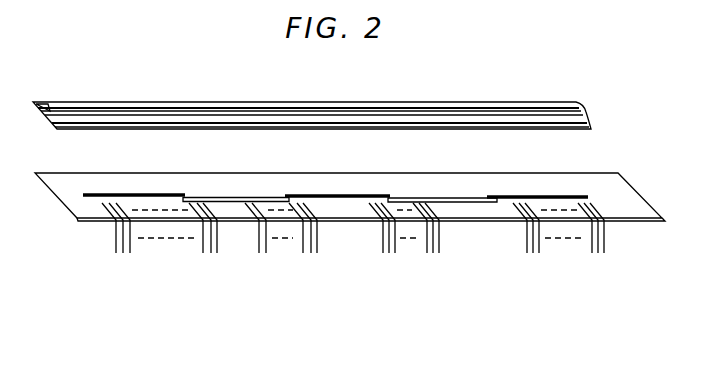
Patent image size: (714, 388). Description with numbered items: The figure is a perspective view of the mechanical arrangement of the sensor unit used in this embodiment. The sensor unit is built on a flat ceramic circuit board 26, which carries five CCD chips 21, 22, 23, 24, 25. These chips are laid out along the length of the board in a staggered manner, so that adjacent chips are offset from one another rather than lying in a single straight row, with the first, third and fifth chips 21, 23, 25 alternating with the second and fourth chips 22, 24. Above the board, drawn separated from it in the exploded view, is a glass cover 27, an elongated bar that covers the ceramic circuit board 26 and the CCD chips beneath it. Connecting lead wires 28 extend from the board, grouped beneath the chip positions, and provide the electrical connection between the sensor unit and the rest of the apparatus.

The CCD chip 21 is at (130, 194).
The CCD chip 22 is at (222, 197).
The CCD chip 23 is at (326, 195).
The CCD chip 24 is at (440, 198).
The CCD chip 25 is at (528, 196).
The ceramic circuit board 26 is at (633, 188).
The glass cover 27 is at (576, 103).
The connecting lead wires 28 is at (132, 260).